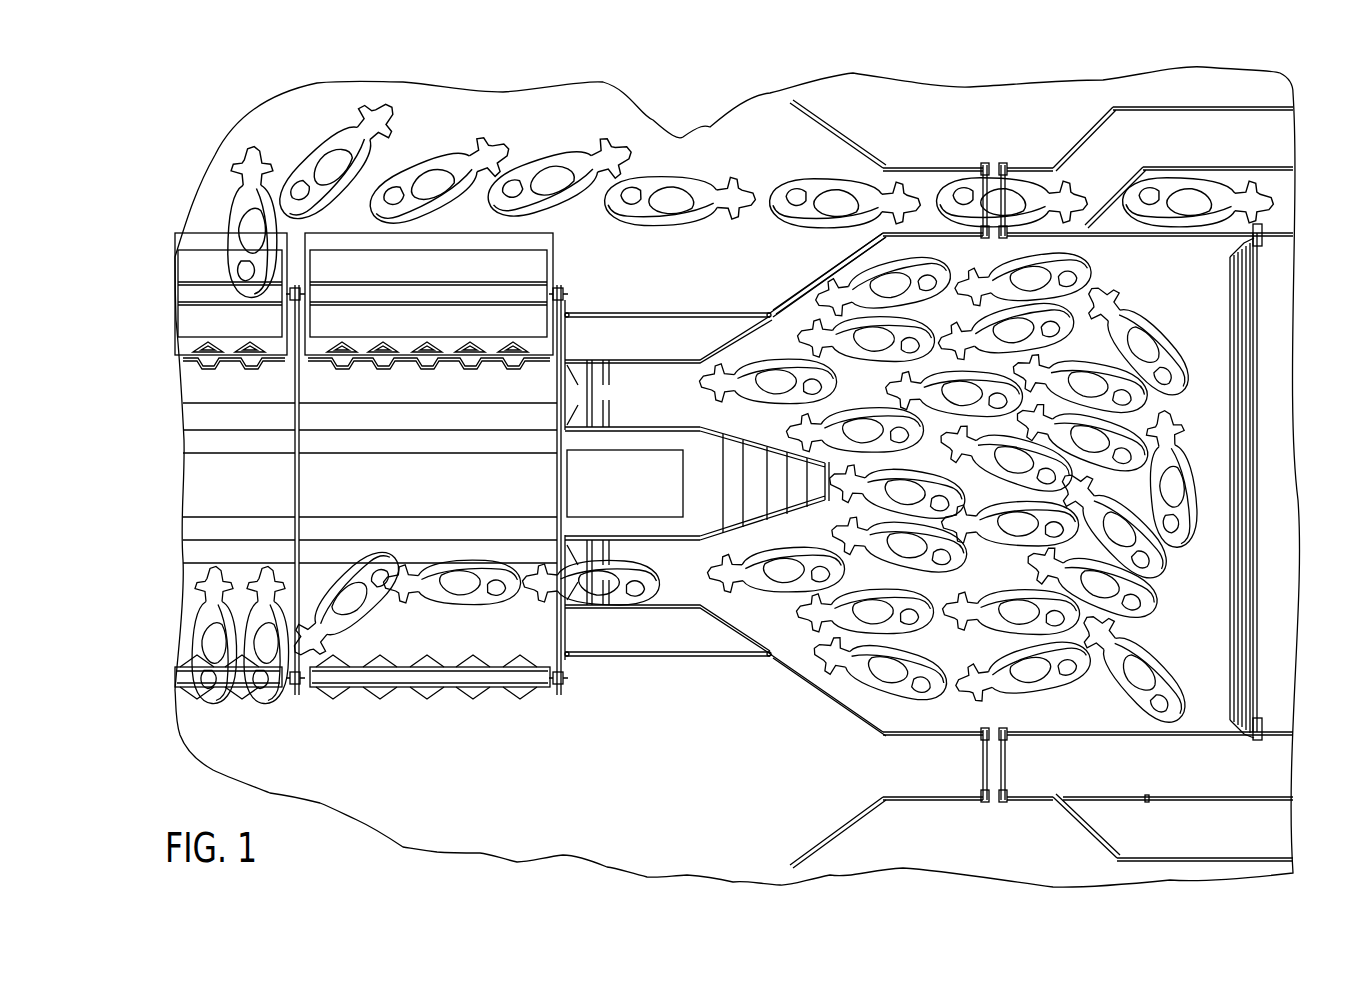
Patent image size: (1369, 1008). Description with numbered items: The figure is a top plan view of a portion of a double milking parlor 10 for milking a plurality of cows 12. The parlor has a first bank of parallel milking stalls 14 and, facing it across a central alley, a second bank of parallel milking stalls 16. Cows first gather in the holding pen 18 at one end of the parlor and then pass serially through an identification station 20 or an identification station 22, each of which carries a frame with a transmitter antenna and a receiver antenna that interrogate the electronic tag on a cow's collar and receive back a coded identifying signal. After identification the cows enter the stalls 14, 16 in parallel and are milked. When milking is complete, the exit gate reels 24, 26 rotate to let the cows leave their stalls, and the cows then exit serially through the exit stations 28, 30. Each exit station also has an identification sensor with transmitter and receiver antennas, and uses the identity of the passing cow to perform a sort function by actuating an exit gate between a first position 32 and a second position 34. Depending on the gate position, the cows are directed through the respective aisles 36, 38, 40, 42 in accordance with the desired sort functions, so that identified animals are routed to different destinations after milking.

The milking parlor 10 is at (676, 126).
The cows 12 is at (578, 148).
The first bank of parallel milking stalls 14 is at (330, 364).
The second bank of parallel milking stalls 16 is at (308, 688).
The holding pen 18 is at (1223, 315).
The identification station 20 is at (603, 358).
The identification station 22 is at (594, 610).
The exit gate reel 24 is at (556, 240).
The exit gate reel 26 is at (540, 690).
The exit station 28 is at (992, 177).
The exit station 30 is at (993, 802).
The first position of exit gate 32 is at (1112, 193).
The second position of exit gate 34 is at (1110, 802).
The aisle 36 is at (1235, 125).
The aisle 38 is at (1285, 207).
The aisle 40 is at (1277, 747).
The aisle 42 is at (1270, 832).